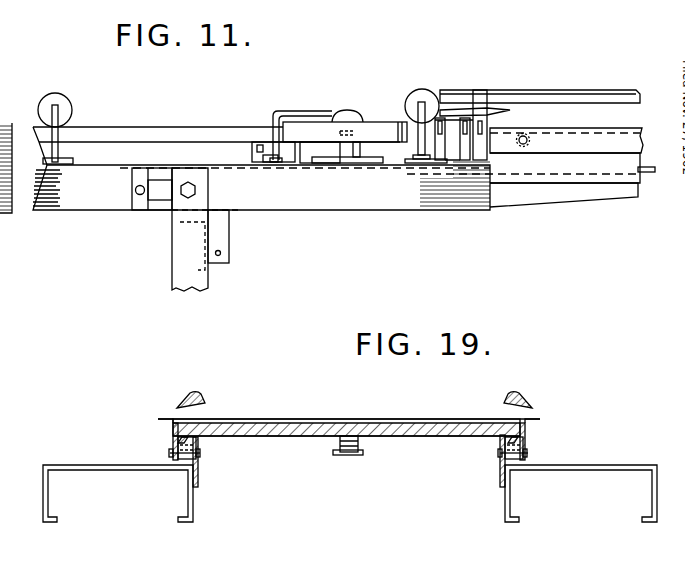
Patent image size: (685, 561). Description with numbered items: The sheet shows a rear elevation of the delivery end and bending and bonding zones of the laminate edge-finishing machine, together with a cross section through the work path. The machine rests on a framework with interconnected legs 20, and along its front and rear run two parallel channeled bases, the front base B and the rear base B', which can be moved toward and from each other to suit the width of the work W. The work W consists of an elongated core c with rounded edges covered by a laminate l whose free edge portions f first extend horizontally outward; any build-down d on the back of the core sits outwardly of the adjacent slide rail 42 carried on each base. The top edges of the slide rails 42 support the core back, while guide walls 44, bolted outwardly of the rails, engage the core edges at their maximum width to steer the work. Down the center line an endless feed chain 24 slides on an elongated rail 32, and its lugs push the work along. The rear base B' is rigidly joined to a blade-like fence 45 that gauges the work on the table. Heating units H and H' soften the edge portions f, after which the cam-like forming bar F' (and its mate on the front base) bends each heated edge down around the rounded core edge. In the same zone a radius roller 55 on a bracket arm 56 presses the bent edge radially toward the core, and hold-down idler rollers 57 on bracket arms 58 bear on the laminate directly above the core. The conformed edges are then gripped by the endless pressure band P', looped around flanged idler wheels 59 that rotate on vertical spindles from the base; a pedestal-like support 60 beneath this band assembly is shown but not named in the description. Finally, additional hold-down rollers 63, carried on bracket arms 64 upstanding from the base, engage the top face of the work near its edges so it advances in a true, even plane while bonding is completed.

In FIG. 11, the legs 20 is at (177, 257).
In FIG. 11, the hold-down rollers 63 is at (60, 99).
In FIG. 11, the bracket arms 64 is at (58, 132).
In FIG. 11, the radius roller 55 is at (347, 110).
In FIG. 11, the bracket arm 56 is at (282, 110).
In FIG. 11, the hold-down idler rollers 57 is at (425, 89).
In FIG. 11, the bracket arm 58 is at (418, 110).
In FIG. 11, the flanged idler wheels 59 is at (395, 143).
In FIG. 11, the pedestal 60 is at (348, 150).
In FIG. 11, the guide walls 44 is at (603, 130).
In FIG. 19, the guide walls 44 is at (177, 447).
In FIG. 11, the slide rail 42 is at (575, 178).
In FIG. 19, the slide rail 42 is at (198, 475).
In FIG. 11, the fence 45 is at (648, 173).
In FIG. 19, the endless feed chain 24 is at (340, 440).
In FIG. 19, the elongated rail 32 is at (362, 455).
In FIG. 11, the endless band P' is at (216, 129).
In FIG. 11, the rear base B' is at (336, 200).
In FIG. 19, the rear base B' is at (118, 475).
In FIG. 19, the front base B is at (581, 475).
In FIG. 11, the forming bar F' is at (474, 111).
In FIG. 11, the heating unit H' is at (540, 83).
In FIG. 19, the heating unit H' is at (186, 388).
In FIG. 19, the heating unit H is at (518, 387).
In FIG. 19, the work W is at (303, 419).
In FIG. 19, the laminate l is at (387, 419).
In FIG. 19, the core c is at (428, 437).
In FIG. 19, the build-down d is at (197, 443).
In FIG. 19, the free edge portions f is at (160, 421).